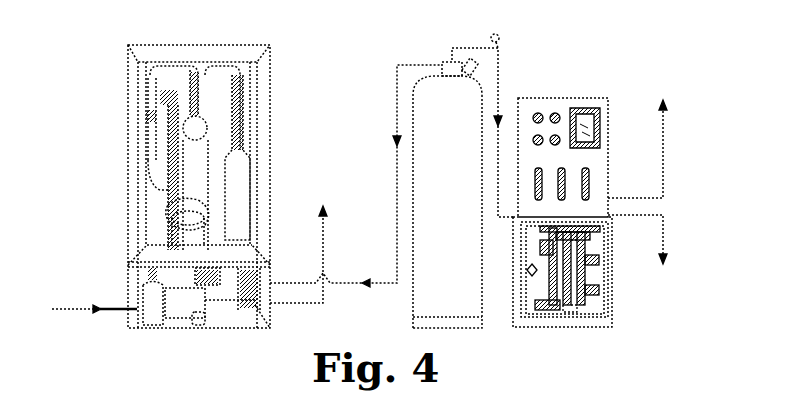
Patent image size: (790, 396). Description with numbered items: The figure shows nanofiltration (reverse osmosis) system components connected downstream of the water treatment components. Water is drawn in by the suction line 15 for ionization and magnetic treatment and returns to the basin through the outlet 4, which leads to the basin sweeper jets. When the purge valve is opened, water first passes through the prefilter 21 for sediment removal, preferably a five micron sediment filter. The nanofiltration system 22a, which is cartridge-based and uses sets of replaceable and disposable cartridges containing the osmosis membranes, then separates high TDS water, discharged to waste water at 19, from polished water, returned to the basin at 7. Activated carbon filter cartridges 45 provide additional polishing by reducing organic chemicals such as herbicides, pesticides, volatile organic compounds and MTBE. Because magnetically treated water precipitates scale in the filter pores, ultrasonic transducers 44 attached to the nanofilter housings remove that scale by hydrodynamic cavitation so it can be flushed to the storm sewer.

The suction line 15 is at (71, 296).
The outlet 4 is at (332, 240).
The prefilter 21 is at (422, 300).
The nanofiltration system 22a is at (525, 242).
The ultrasonic transducers 44 is at (548, 303).
The activated carbon filter cartridges 45 is at (585, 268).
The polished water return 7 is at (652, 130).
The waste water discharge 19 is at (668, 233).